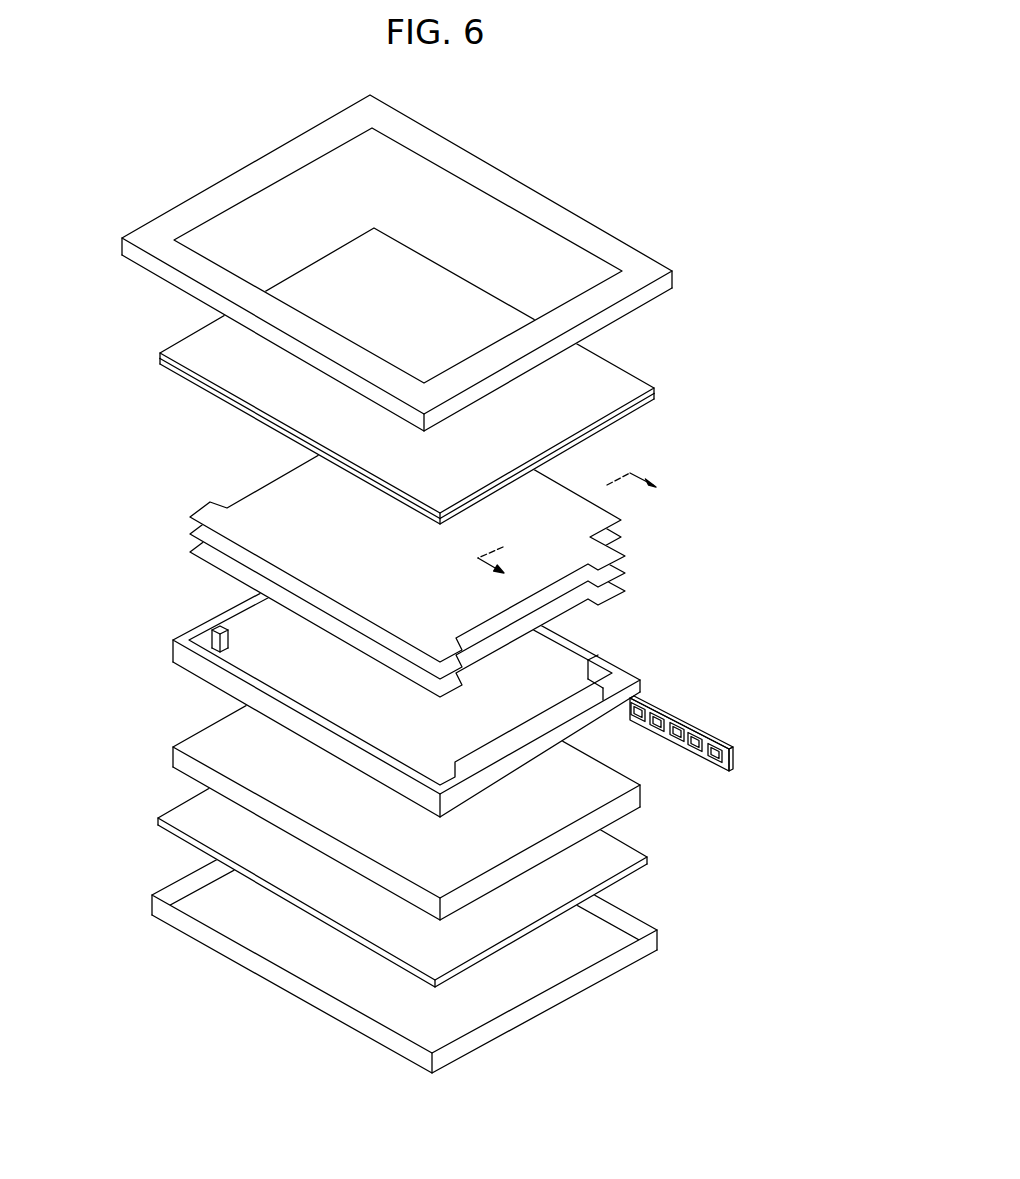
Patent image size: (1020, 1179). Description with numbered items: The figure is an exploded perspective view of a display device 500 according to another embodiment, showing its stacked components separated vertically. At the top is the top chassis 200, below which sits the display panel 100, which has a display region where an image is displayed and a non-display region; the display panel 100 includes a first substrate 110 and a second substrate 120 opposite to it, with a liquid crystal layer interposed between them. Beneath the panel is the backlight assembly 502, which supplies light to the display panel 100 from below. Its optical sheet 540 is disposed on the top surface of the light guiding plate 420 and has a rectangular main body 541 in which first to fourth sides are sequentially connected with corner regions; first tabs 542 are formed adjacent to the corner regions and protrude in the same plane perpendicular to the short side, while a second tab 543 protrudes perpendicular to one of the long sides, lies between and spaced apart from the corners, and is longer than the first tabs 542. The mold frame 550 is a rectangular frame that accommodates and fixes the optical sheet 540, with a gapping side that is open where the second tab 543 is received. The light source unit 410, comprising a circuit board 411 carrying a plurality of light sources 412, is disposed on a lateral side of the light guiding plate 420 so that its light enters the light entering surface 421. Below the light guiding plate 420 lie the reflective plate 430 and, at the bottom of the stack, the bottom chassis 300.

The display device 500 is at (625, 103).
The top chassis 200 is at (630, 248).
The display panel 100 is at (471, 376).
The first substrate 110 is at (654, 387).
The second substrate 120 is at (654, 400).
The backlight assembly 502 is at (98, 500).
The optical sheet 540 is at (412, 548).
The main body 541 is at (278, 492).
The first tabs 542 is at (207, 502).
The second tab 543 is at (607, 512).
The mold frame 550 is at (173, 640).
The light source unit 410 is at (733, 733).
The circuit board 411 is at (710, 730).
The light sources 412 is at (727, 757).
The light guiding plate 420 is at (413, 777).
The light entering surface 421 is at (640, 787).
The reflective plate 430 is at (647, 856).
The bottom chassis 300 is at (657, 940).